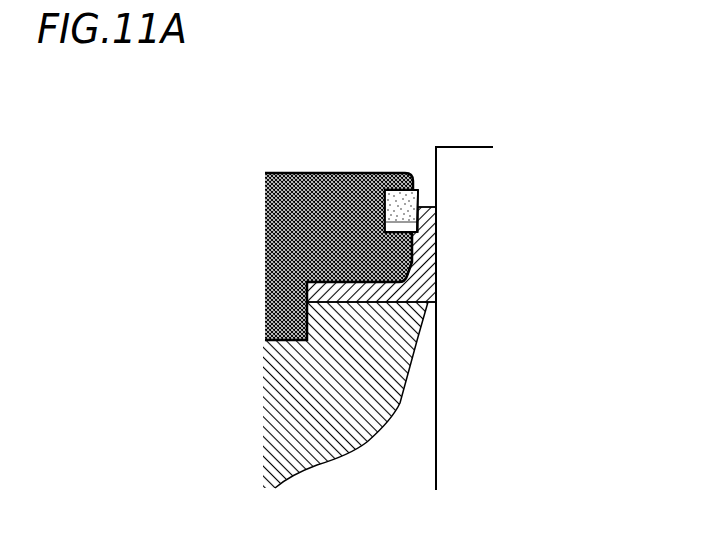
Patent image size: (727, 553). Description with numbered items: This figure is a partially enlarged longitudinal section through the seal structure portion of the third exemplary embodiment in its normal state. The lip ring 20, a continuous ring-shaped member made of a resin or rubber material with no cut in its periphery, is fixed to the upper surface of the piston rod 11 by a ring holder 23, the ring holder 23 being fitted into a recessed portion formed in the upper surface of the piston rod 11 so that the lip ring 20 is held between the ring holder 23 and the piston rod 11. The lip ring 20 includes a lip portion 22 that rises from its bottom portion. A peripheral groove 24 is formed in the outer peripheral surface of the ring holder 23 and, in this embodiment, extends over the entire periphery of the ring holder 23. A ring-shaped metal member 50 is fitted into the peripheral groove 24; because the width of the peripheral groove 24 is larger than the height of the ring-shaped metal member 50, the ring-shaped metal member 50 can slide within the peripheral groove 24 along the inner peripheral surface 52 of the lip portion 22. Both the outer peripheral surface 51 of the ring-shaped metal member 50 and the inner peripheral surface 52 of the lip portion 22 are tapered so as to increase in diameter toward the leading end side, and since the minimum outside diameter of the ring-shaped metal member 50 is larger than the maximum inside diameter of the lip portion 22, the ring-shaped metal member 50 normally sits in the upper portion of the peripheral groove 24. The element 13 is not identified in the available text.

The piston rod 11 is at (358, 446).
The inner ring 13 is at (353, 375).
The lip ring 20 is at (397, 302).
The lip portion 22 is at (437, 217).
The ring holder 23 is at (300, 205).
The peripheral groove 24 is at (360, 177).
The ring-shaped metal member 50 is at (403, 202).
The outer peripheral surface 51 is at (420, 203).
The inner peripheral surface 52 is at (403, 248).